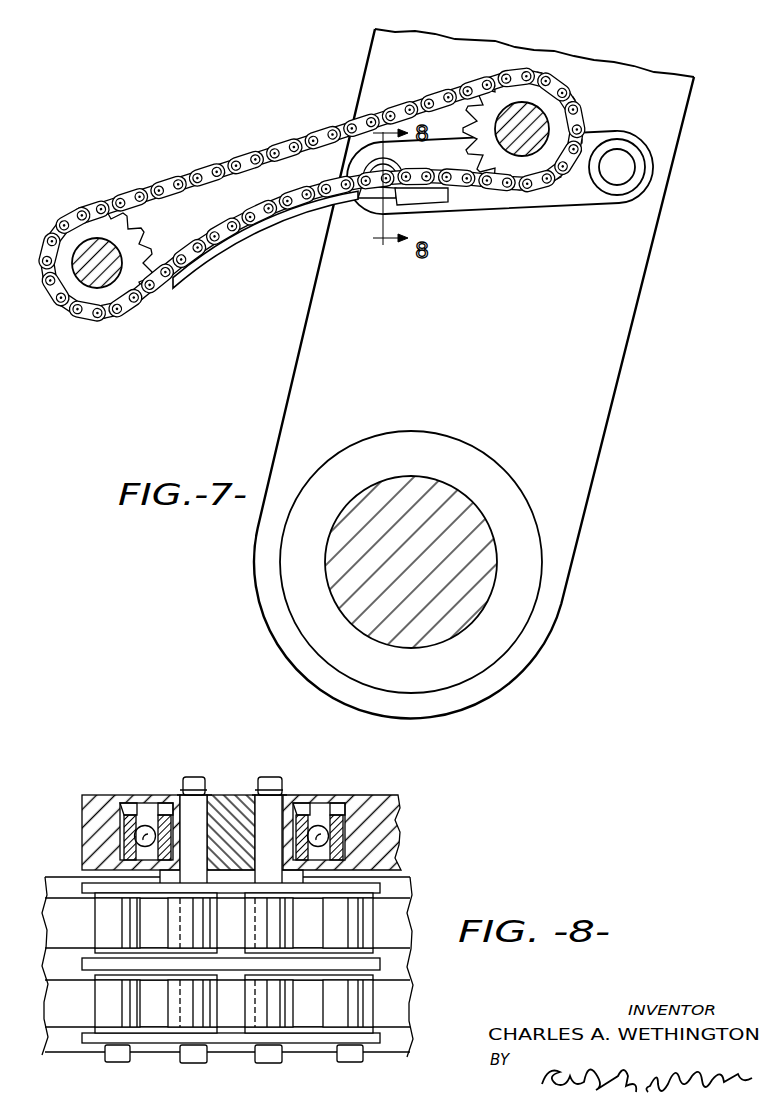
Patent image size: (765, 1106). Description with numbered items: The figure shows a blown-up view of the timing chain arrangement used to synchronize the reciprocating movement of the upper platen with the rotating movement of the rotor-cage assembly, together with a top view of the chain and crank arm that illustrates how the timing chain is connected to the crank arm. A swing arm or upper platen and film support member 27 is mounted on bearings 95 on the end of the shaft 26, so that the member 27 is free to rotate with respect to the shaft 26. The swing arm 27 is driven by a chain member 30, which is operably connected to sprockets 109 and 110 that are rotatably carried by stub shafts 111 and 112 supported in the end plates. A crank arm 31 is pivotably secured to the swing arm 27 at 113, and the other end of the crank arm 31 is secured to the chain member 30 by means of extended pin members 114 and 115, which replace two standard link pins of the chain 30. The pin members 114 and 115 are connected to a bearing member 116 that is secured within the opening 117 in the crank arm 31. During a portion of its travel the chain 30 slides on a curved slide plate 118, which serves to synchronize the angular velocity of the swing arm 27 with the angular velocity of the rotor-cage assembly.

In FIG. 7, the shaft 26 is at (491, 572).
In FIG. 7, the swing arm or upper platen and film support member 27 is at (615, 398).
In FIG. 7, the chain member 30 is at (232, 158).
In FIG. 7, the crank arm 31 is at (500, 172).
In FIG. 8, the crank arm 31 is at (356, 797).
In FIG. 7, the bearings 95 is at (511, 476).
In FIG. 7, the sprocket 109 is at (118, 267).
In FIG. 7, the sprocket 110 is at (528, 207).
In FIG. 7, the stub shaft 111 is at (129, 250).
In FIG. 7, the stub shaft 112 is at (512, 103).
In FIG. 7, the pivot connection 113 is at (652, 186).
In FIG. 7, the extended pin member 114 is at (392, 190).
In FIG. 8, the extended pin member 114 is at (262, 817).
In FIG. 7, the extended pin member 115 is at (370, 193).
In FIG. 8, the extended pin member 115 is at (190, 813).
In FIG. 8, the bearing member 116 is at (101, 823).
In FIG. 7, the opening 117 is at (406, 161).
In FIG. 8, the opening 117 is at (130, 802).
In FIG. 7, the curved slide plate 118 is at (243, 240).